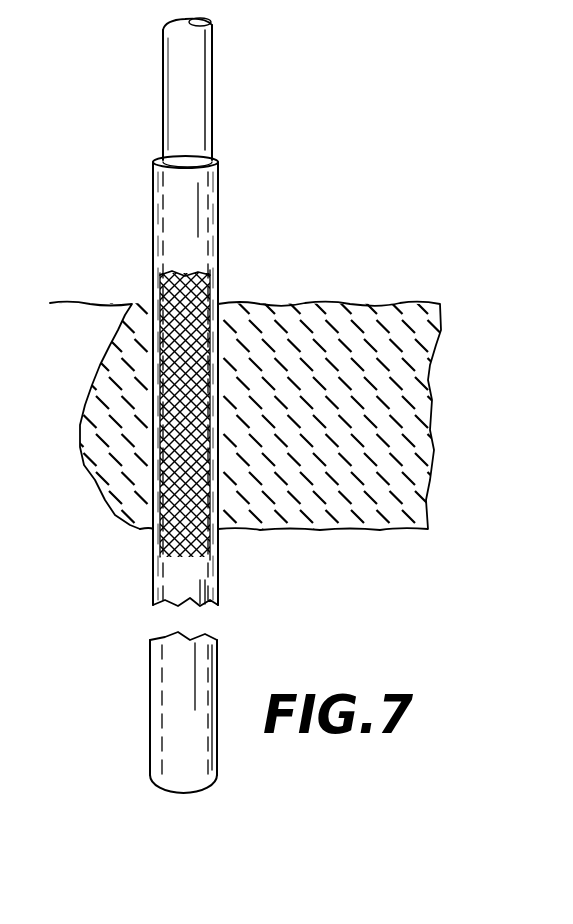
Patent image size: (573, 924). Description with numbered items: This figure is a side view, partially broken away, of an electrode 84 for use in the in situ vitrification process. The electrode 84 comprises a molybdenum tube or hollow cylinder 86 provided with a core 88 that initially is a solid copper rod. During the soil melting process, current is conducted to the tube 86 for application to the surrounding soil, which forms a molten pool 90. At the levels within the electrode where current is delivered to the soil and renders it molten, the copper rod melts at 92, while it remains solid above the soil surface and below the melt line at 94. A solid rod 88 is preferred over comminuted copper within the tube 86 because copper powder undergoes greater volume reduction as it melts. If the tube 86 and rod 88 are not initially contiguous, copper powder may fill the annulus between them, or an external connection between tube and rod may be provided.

The electrode 84 is at (245, 203).
The molybdenum tube 86 is at (217, 277).
The core 88 is at (212, 75).
The molten pool 90 is at (435, 385).
The melted copper rod region 92 is at (157, 380).
The melt line 94 is at (227, 590).